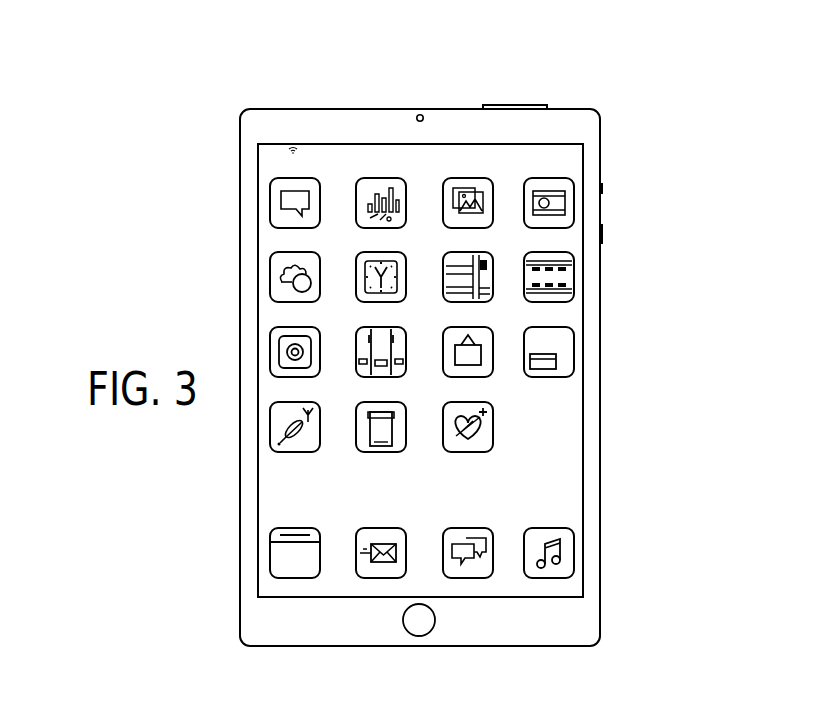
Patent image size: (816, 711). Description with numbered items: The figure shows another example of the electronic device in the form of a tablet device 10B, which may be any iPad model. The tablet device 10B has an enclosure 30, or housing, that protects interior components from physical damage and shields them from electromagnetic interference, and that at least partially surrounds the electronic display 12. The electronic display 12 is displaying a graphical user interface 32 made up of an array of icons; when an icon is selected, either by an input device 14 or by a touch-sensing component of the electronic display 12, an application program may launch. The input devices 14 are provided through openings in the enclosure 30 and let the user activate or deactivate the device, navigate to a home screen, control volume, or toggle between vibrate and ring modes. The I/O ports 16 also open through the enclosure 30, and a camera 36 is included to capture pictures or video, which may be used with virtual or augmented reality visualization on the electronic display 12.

The tablet device 10B is at (253, 90).
The electronic display 12 is at (583, 482).
The input devices 14 is at (515, 103).
The I/O ports 16 is at (419, 646).
The enclosure 30 is at (600, 306).
The graphical user interface 32 is at (570, 437).
The camera 36 is at (416, 116).